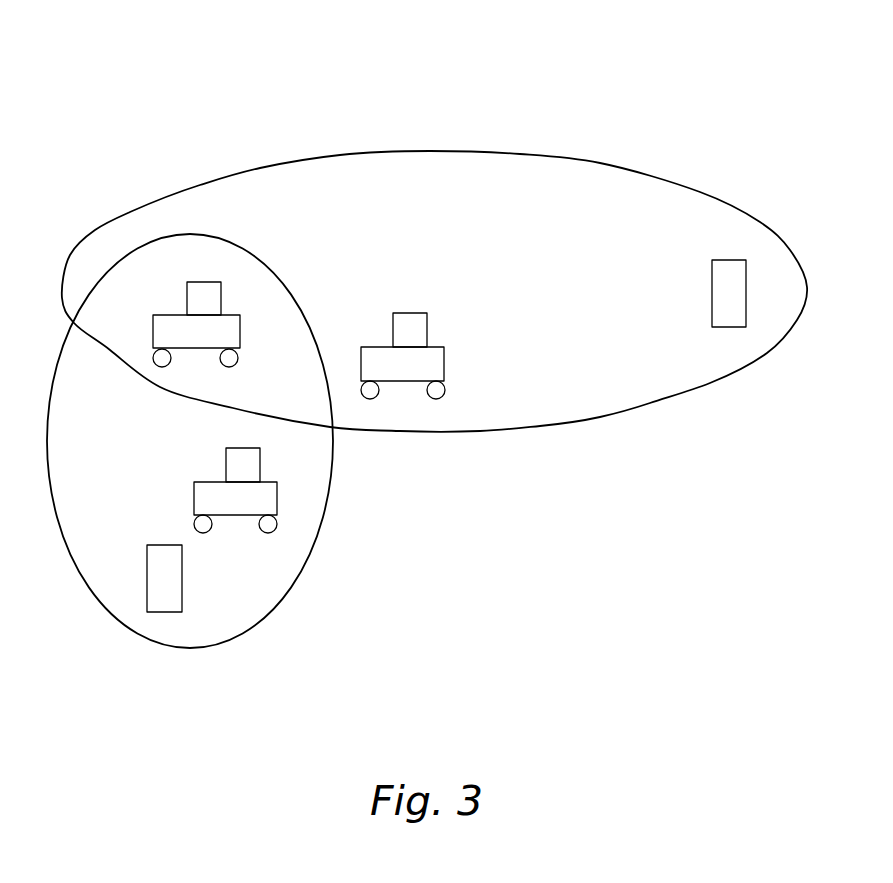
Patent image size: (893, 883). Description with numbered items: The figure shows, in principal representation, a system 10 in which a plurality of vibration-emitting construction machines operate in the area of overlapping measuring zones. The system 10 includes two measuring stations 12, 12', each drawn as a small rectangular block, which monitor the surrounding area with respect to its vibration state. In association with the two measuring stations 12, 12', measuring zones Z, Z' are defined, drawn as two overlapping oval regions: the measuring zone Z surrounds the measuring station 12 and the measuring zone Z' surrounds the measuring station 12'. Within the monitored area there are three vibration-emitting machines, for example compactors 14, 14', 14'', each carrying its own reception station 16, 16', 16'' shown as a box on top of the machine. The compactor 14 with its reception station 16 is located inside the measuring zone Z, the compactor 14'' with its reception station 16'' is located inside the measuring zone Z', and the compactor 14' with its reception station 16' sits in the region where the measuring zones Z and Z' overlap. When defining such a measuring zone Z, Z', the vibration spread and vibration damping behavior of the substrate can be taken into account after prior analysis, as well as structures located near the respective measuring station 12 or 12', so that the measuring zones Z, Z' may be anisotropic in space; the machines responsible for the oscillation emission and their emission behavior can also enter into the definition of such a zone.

The system 10 is at (607, 92).
The measuring station 12 is at (178, 657).
The measuring station 12' is at (751, 228).
The compactor 14 is at (292, 527).
The compactor 14' is at (126, 336).
The compactor 14'' is at (470, 423).
The reception station 16 is at (307, 472).
The reception station 16' is at (240, 188).
The reception station 16'' is at (479, 217).
The measuring zone Z is at (208, 456).
The measuring zone Z' is at (434, 326).